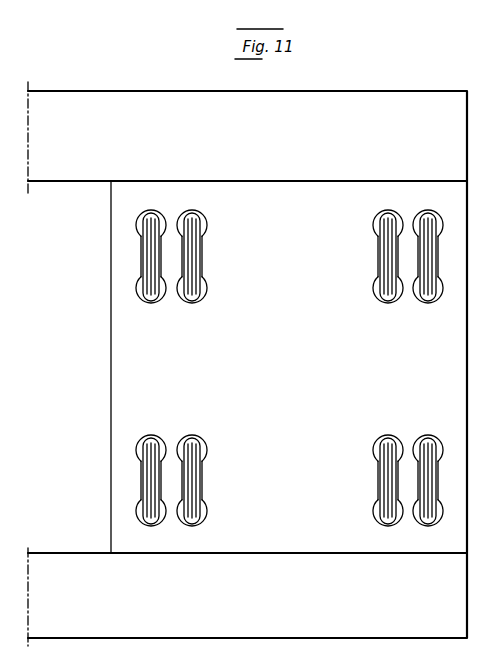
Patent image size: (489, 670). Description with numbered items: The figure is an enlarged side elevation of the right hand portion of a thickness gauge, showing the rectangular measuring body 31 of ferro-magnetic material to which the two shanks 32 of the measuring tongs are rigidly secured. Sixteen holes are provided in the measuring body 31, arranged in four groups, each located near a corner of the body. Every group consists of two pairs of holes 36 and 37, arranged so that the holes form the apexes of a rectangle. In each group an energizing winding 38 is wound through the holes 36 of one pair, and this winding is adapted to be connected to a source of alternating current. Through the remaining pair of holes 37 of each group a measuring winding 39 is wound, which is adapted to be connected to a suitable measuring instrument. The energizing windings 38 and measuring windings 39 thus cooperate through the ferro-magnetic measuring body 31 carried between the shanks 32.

The measuring body 31 is at (291, 374).
The shanks 32 is at (87, 177).
The holes 36 is at (150, 211).
The holes 37 is at (197, 211).
The energizing winding 38 is at (142, 255).
The measuring winding 39 is at (203, 255).